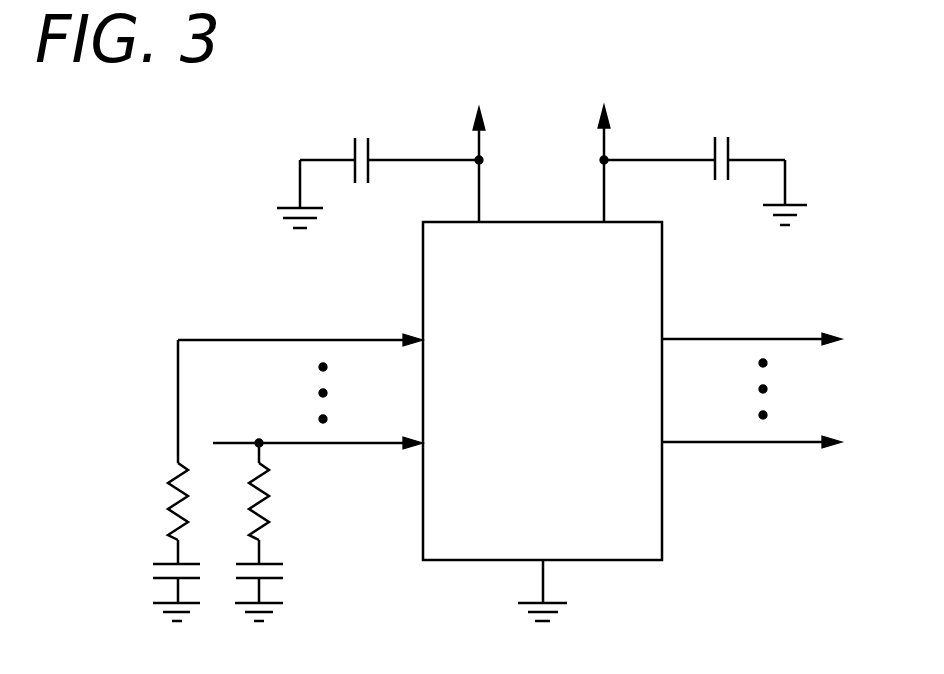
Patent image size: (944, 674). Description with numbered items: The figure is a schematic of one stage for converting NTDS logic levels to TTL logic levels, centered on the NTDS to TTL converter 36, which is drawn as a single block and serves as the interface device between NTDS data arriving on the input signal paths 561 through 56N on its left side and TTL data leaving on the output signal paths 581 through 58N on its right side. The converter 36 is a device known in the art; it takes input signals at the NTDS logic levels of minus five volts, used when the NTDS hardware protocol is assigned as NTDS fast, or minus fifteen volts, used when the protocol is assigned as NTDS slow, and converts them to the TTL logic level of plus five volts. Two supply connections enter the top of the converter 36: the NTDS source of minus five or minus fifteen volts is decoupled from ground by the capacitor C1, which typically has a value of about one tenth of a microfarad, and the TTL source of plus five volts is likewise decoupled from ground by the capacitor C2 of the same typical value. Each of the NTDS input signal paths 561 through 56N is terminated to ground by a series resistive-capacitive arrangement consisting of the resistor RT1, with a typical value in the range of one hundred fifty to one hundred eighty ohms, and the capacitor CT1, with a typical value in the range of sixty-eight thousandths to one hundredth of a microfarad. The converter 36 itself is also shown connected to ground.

The NTDS to TTL converter 36 is at (662, 238).
The signal path 561 is at (313, 340).
The signal path 56N is at (355, 443).
The signal path 581 is at (736, 339).
The signal path 58N is at (710, 442).
The capacitor C1 is at (729, 157).
The capacitor C2 is at (377, 129).
The resistor RT1 is at (290, 492).
The capacitor CT1 is at (290, 587).